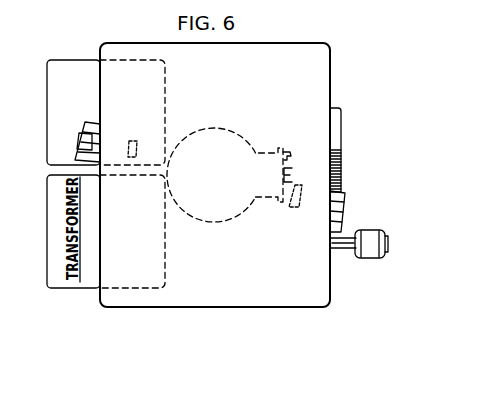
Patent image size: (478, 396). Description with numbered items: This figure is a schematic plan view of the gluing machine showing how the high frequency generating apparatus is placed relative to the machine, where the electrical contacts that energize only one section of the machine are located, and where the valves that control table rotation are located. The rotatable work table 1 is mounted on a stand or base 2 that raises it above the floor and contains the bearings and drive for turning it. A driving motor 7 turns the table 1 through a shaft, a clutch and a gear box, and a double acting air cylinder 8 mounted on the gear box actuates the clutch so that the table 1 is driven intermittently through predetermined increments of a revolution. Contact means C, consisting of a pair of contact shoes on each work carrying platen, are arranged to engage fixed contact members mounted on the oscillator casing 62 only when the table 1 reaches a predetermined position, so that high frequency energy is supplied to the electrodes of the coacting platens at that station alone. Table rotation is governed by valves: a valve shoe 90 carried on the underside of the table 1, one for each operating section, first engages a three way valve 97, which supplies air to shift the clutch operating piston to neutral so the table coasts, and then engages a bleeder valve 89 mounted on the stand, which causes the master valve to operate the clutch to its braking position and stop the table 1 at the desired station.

The work table 1 is at (325, 75).
The stand or base 2 is at (232, 145).
The driving motor 7 is at (385, 241).
The double acting air cylinder 8 is at (472, 18).
The oscillator casing 62 is at (58, 68).
The bleeder valve 89 is at (290, 157).
The valve shoe 90 is at (134, 143).
The three way valve 97 is at (290, 178).
The contact means C is at (80, 128).